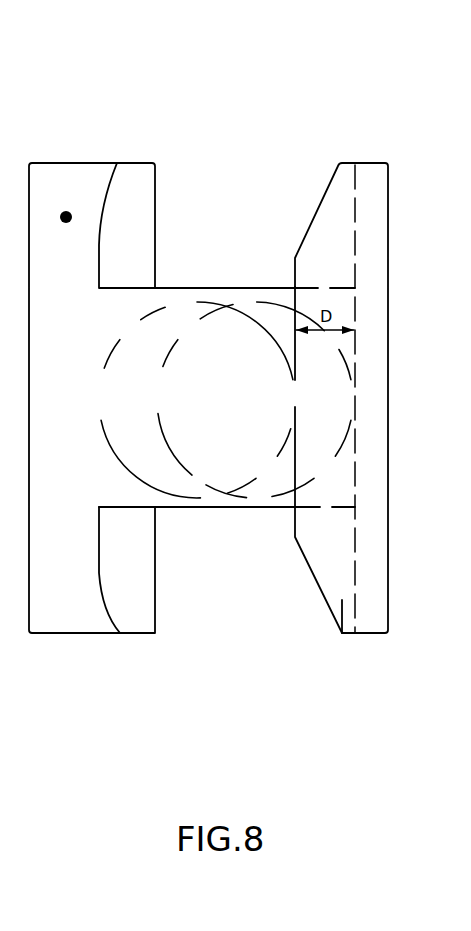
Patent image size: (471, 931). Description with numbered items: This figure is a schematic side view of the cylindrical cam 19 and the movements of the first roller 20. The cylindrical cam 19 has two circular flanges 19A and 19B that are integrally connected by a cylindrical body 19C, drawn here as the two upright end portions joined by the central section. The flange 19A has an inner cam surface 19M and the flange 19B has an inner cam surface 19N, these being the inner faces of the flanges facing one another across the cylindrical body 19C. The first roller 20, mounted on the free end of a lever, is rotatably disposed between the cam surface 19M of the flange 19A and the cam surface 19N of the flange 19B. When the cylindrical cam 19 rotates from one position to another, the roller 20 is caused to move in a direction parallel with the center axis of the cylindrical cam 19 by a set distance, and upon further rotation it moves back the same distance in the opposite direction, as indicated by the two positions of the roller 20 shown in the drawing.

The cylindrical cam 19 is at (70, 207).
The circular flange 19A is at (145, 163).
The circular flange 19B is at (374, 163).
The cylindrical body 19C is at (234, 287).
The inner cam surface 19M is at (104, 578).
The inner cam surface 19N is at (313, 578).
The first roller 20 is at (140, 309).